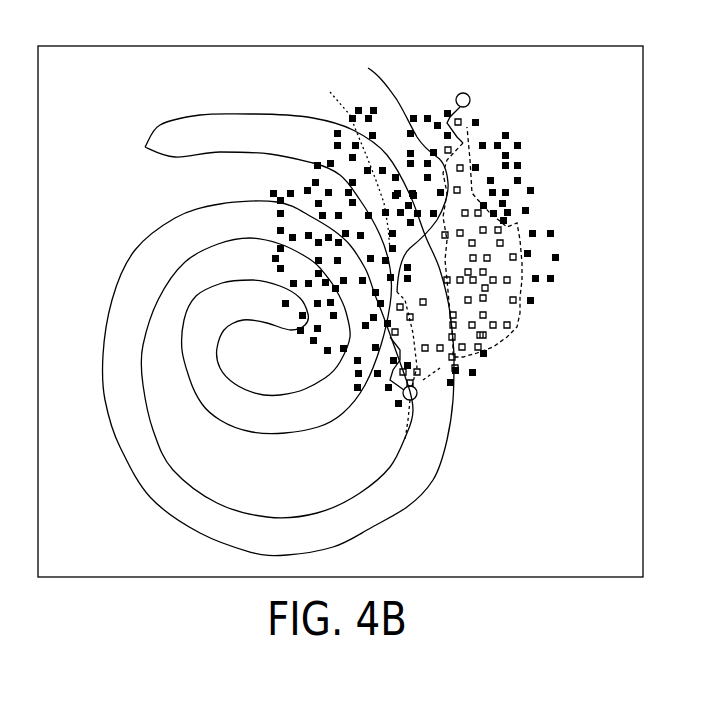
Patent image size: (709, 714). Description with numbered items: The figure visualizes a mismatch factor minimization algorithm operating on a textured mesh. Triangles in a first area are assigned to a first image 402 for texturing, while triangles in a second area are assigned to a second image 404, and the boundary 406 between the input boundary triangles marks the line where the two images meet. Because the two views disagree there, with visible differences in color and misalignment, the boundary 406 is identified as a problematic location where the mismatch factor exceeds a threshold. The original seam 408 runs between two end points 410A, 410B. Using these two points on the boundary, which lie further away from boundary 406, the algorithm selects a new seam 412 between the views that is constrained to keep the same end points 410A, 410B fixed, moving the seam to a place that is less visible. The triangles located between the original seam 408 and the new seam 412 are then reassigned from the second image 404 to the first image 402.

The first image 402 is at (212, 72).
The second image 404 is at (536, 66).
The boundary 406 is at (340, 167).
The original seam 408 is at (368, 68).
The end point 410A is at (466, 93).
The end point 410B is at (418, 397).
The new seam 412 is at (532, 218).